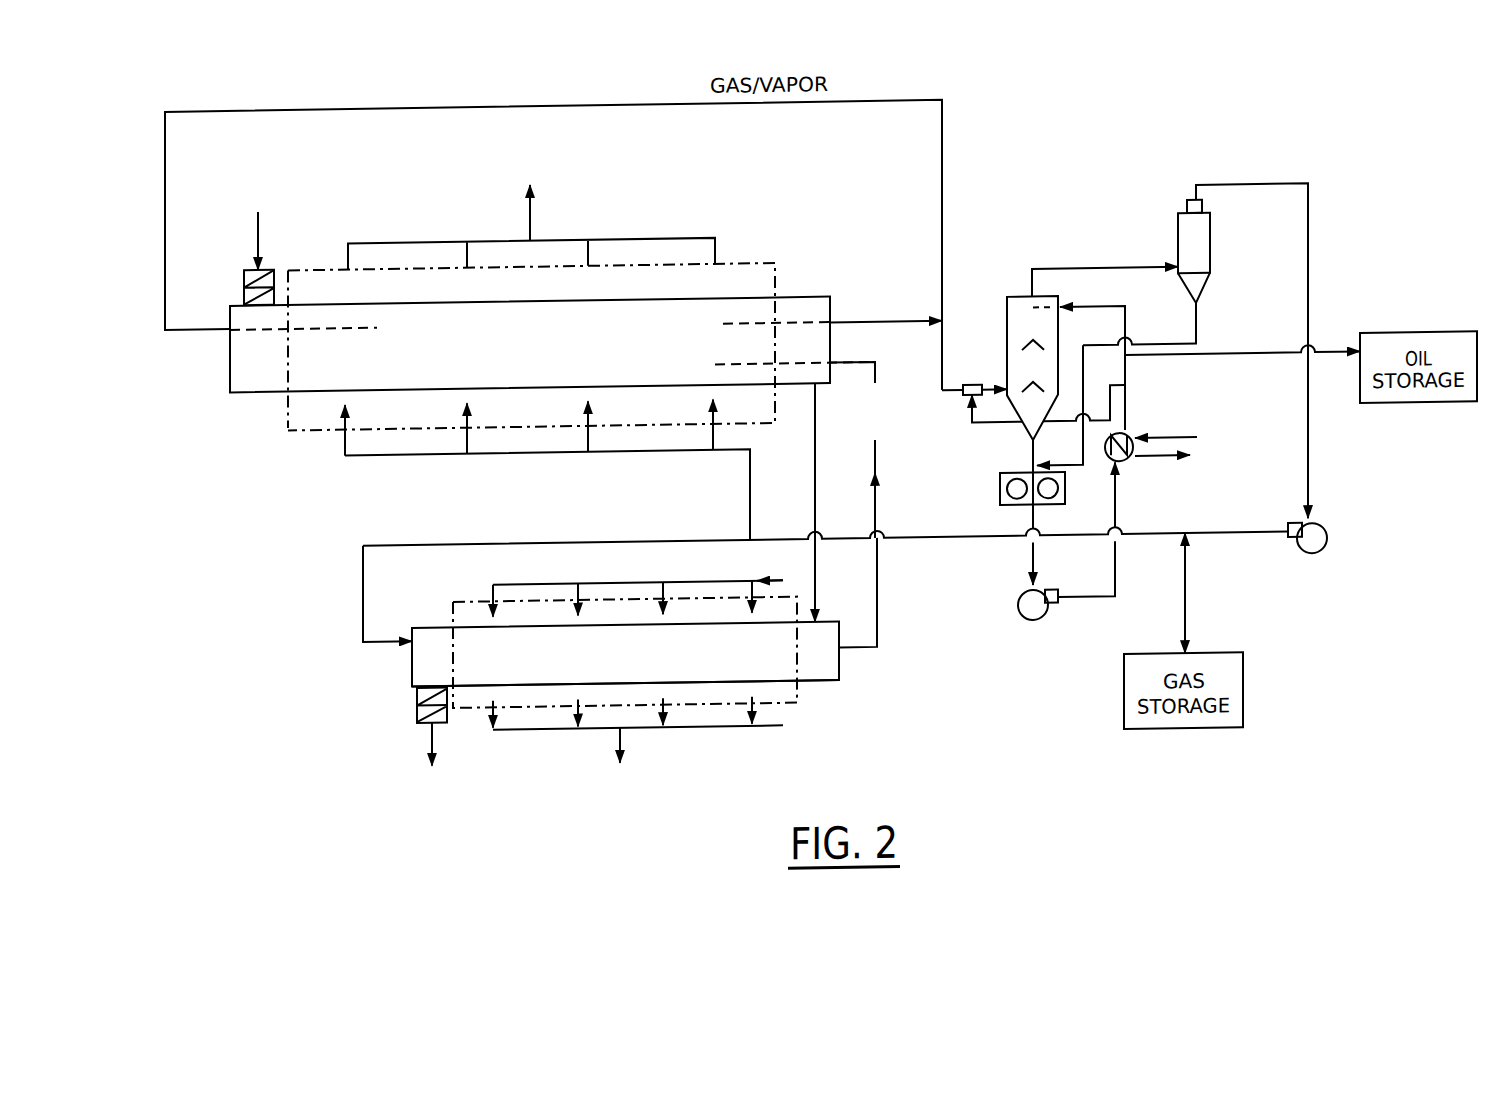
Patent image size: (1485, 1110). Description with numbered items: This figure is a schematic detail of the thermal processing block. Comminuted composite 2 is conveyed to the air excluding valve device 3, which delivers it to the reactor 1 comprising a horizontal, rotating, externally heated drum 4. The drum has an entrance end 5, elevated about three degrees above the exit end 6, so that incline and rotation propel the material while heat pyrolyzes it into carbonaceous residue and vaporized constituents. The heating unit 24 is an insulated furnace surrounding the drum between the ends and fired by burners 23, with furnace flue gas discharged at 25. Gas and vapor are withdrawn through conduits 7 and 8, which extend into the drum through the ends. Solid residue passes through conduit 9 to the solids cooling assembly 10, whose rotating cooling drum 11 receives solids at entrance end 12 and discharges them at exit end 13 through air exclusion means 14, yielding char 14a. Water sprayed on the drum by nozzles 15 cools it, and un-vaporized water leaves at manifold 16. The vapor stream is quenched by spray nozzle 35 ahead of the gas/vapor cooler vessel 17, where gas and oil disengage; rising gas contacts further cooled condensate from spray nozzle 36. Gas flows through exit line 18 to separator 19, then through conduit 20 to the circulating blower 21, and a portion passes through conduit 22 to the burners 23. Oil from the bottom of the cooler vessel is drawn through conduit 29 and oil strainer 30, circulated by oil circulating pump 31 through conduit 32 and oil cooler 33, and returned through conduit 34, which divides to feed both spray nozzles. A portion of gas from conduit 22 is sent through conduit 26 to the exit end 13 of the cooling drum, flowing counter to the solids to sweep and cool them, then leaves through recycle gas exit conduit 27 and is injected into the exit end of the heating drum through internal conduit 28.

The reactor 1 is at (530, 345).
The comminuted composite 2 is at (260, 200).
The air excluding valve device 3 is at (244, 268).
The drum 4 is at (815, 299).
The entrance end 5 is at (230, 359).
The exit end 6 is at (835, 348).
The conduit 7 is at (343, 326).
The conduit 8 is at (745, 325).
The conduit 9 is at (820, 515).
The solids cooling assembly 10 is at (625, 653).
The cooling drum 11 is at (840, 686).
The entrance end 12 is at (841, 671).
The exit end 13 is at (412, 660).
The air exclusion means 14 is at (417, 715).
The char 14a is at (458, 761).
The nozzles 15 is at (638, 639).
The manifold 16 is at (642, 762).
The gas/vapor cooler vessel 17 is at (1002, 304).
The exit line 18 is at (1138, 271).
The separator 19 is at (1140, 154).
The conduit 20 is at (1310, 284).
The circulating blower 21 is at (1316, 567).
The conduit 22 is at (1147, 536).
The burners 23 is at (547, 472).
The heating unit 24 is at (318, 428).
The flue gas discharge 25 is at (531, 200).
The conduit 26 is at (774, 573).
The recycle gas exit conduit 27 is at (880, 618).
The internal conduit 28 is at (745, 367).
The conduit 29 is at (1040, 522).
The oil strainer 30 is at (1030, 472).
The oil circulating pump 31 is at (1033, 633).
The conduit 32 is at (1095, 606).
The oil cooler 33 is at (1133, 464).
The conduit 34 is at (1128, 426).
The spray nozzle 35 is at (967, 386).
The spray nozzle 36 is at (1042, 325).